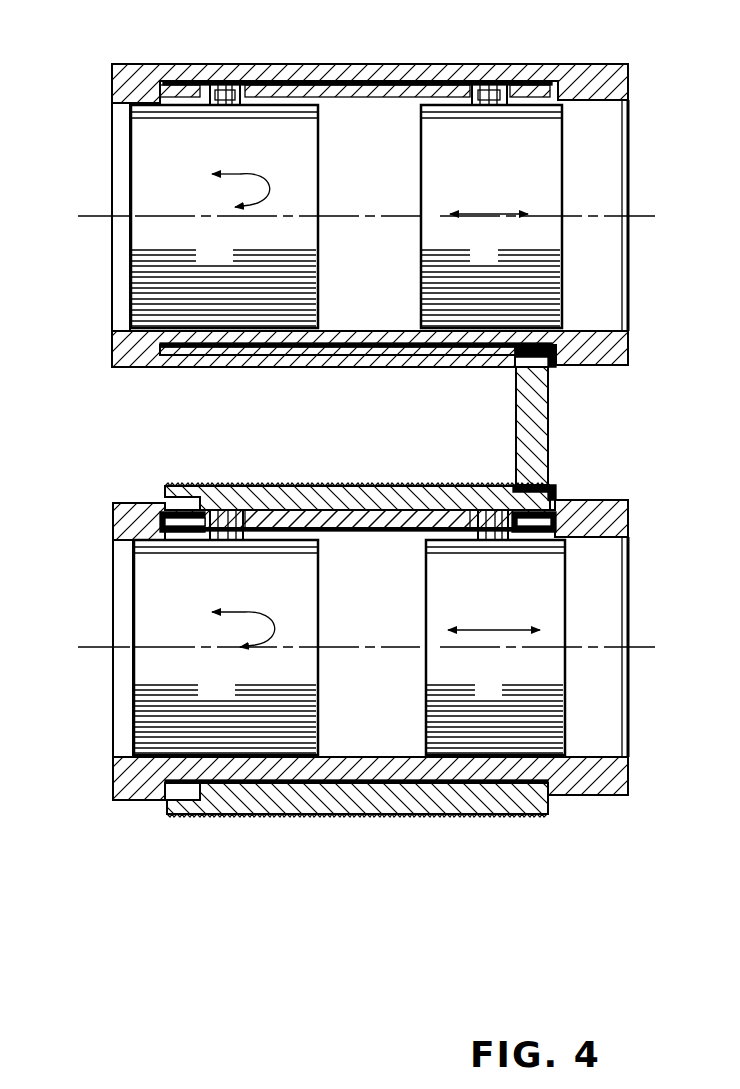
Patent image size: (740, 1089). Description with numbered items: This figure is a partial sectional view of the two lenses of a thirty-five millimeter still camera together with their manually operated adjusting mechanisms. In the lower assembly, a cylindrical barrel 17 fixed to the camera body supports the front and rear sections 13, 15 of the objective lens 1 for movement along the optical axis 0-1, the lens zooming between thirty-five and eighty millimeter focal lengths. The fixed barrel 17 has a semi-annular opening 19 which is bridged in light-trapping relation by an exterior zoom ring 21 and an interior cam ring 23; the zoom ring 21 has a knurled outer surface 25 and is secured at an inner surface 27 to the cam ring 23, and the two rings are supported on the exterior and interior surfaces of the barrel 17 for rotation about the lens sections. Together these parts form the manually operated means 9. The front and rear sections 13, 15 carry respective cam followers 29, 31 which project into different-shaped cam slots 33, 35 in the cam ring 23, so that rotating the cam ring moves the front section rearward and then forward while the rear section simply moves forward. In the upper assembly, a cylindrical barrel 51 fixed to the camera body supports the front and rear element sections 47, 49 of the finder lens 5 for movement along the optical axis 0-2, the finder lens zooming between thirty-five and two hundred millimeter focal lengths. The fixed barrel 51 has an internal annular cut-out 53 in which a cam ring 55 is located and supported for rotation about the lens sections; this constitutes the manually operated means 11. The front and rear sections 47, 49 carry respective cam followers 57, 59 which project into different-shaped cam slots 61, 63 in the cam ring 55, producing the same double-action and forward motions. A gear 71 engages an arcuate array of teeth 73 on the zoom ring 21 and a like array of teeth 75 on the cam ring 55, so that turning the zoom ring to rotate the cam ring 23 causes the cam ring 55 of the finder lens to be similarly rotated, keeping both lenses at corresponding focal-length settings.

The objective lens 1 is at (130, 638).
The finder lens 5 is at (112, 150).
The manually operated means 9 is at (113, 500).
The manually operated means 11 is at (112, 85).
The front section 13 is at (318, 590).
The rear section 15 is at (426, 625).
The cylindrical barrel 17 is at (113, 525).
The semi-annular opening 19 is at (330, 500).
The zoom ring 21 is at (420, 500).
The cam ring 23 is at (398, 528).
The knurled outer surface 25 is at (460, 500).
The inner surface 27 is at (375, 512).
The cam follower 29 is at (230, 535).
The cam follower 31 is at (495, 540).
The cam slot 33 is at (232, 500).
The cam slot 35 is at (500, 528).
The front element section 47 is at (318, 133).
The rear element section 49 is at (420, 182).
The cylindrical barrel 51 is at (160, 64).
The annular cut-out 53 is at (350, 92).
The cam ring 55 is at (398, 94).
The cam follower 57 is at (228, 100).
The cam follower 59 is at (495, 105).
The cam slot 61 is at (225, 95).
The cam slot 63 is at (490, 95).
The gear 71 is at (548, 410).
The arcuate array of teeth 73 is at (552, 480).
The array of teeth 75 is at (550, 367).
The optical axis 0-1 is at (648, 647).
The optical axis 0-2 is at (78, 216).